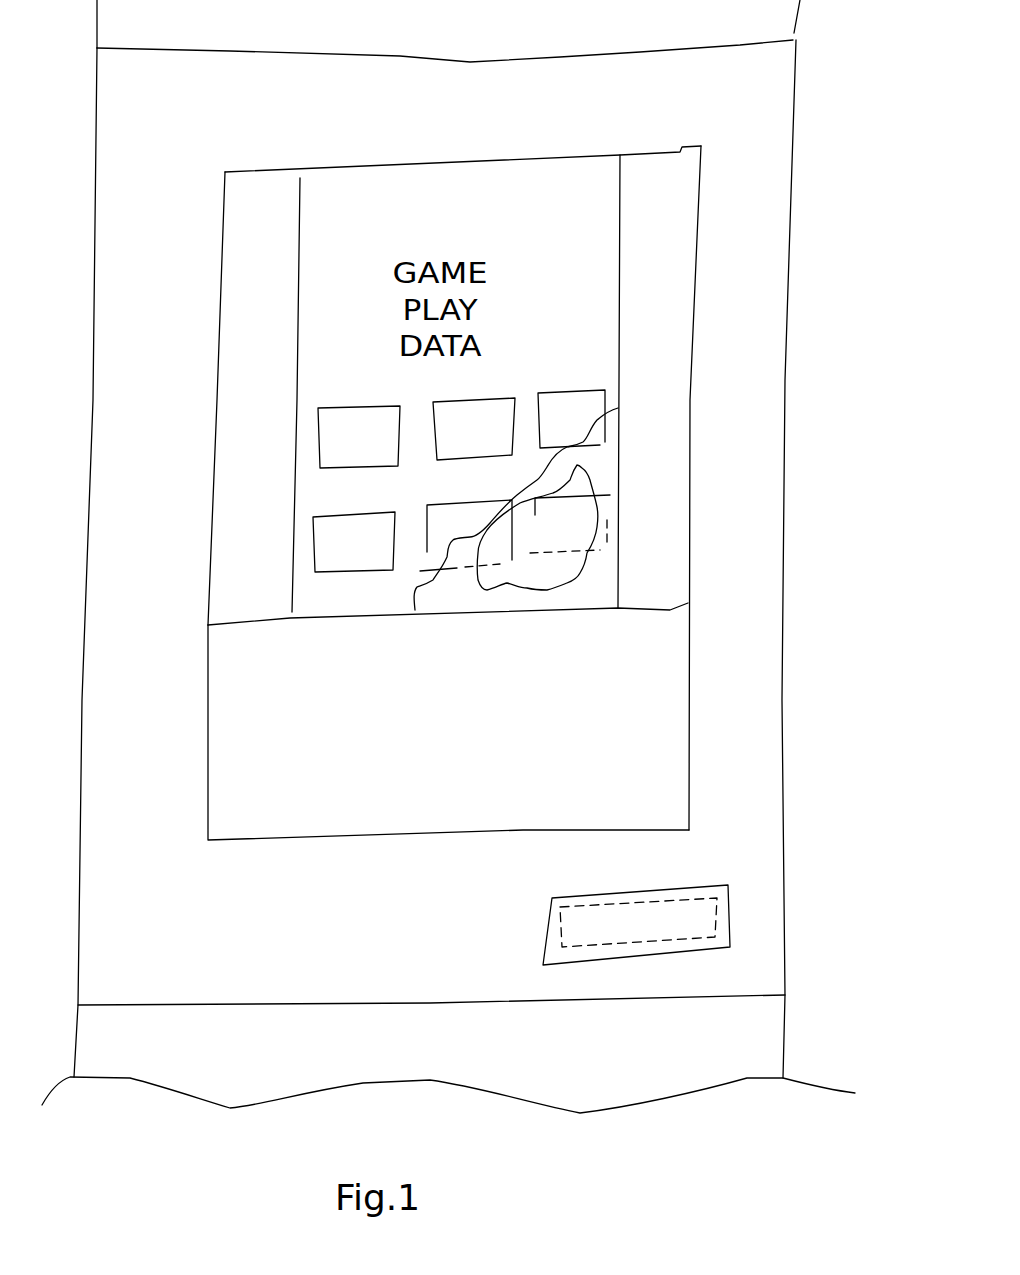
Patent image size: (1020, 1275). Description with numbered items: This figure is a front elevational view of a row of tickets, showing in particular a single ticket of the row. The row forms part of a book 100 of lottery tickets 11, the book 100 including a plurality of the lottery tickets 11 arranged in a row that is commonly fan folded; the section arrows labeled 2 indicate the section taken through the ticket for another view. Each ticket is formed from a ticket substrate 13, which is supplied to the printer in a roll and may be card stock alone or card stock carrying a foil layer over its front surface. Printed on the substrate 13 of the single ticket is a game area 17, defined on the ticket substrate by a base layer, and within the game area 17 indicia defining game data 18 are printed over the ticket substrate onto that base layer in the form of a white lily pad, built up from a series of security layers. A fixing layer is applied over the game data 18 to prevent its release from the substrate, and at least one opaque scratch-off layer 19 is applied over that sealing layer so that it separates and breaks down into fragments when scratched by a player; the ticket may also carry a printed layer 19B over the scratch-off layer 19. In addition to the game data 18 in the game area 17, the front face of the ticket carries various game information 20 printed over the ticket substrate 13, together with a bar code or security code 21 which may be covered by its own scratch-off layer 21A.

The section line for FIG. 2 is at (478, 15).
The lottery ticket 11 is at (778, 220).
The ticket substrate 13 is at (768, 717).
The game area 17 is at (620, 572).
The game data 18 is at (328, 558).
The opaque scratch-off layer 19 is at (455, 598).
The printed layer 19B is at (560, 577).
The game information 20 is at (395, 805).
The bar code or security code 21 is at (652, 920).
The scratch-off layer 21A is at (688, 892).
The book of lottery tickets 100 is at (479, 556).